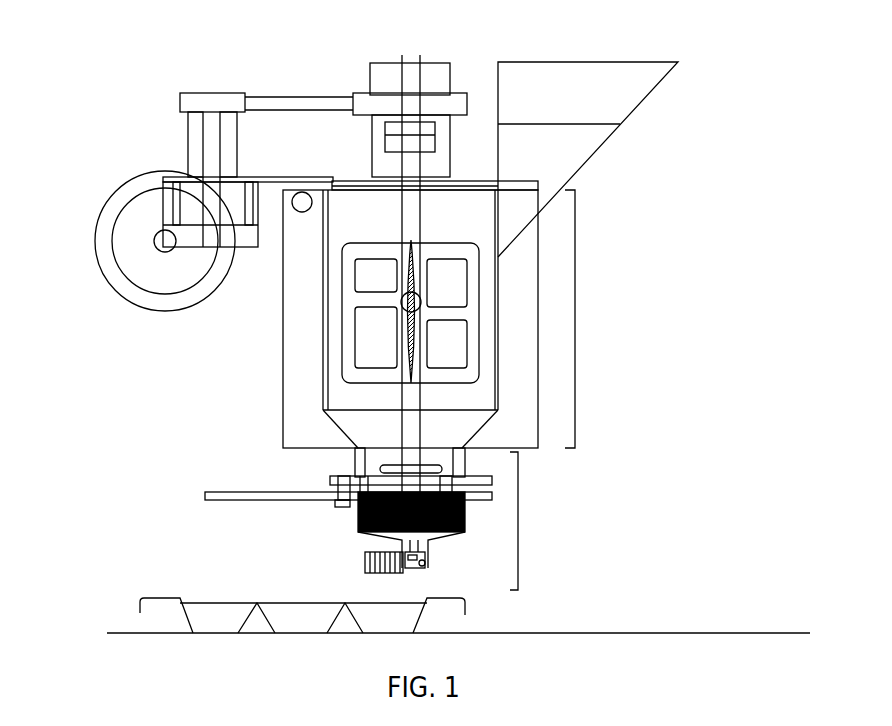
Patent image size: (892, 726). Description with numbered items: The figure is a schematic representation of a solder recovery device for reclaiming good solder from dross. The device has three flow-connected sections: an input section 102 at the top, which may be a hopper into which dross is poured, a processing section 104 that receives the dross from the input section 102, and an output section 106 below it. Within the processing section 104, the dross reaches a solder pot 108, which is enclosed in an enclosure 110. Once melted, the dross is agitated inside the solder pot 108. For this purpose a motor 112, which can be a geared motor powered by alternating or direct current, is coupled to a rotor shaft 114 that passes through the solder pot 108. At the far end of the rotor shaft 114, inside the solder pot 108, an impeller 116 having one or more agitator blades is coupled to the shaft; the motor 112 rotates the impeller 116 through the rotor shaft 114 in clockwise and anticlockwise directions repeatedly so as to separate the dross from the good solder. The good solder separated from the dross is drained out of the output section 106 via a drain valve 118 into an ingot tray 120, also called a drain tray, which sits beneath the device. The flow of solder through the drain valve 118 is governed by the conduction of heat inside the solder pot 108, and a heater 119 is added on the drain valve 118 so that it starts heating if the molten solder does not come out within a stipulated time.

The input section 102 is at (667, 77).
The processing section 104 is at (575, 322).
The output section 106 is at (518, 522).
The solder pot 108 is at (323, 303).
The enclosure 110 is at (283, 402).
The motor 112 is at (142, 182).
The rotor shaft 114 is at (408, 343).
The impeller 116 is at (460, 377).
The drain valve 118 is at (425, 563).
The heater 119 is at (365, 553).
The ingot tray 120 is at (247, 620).